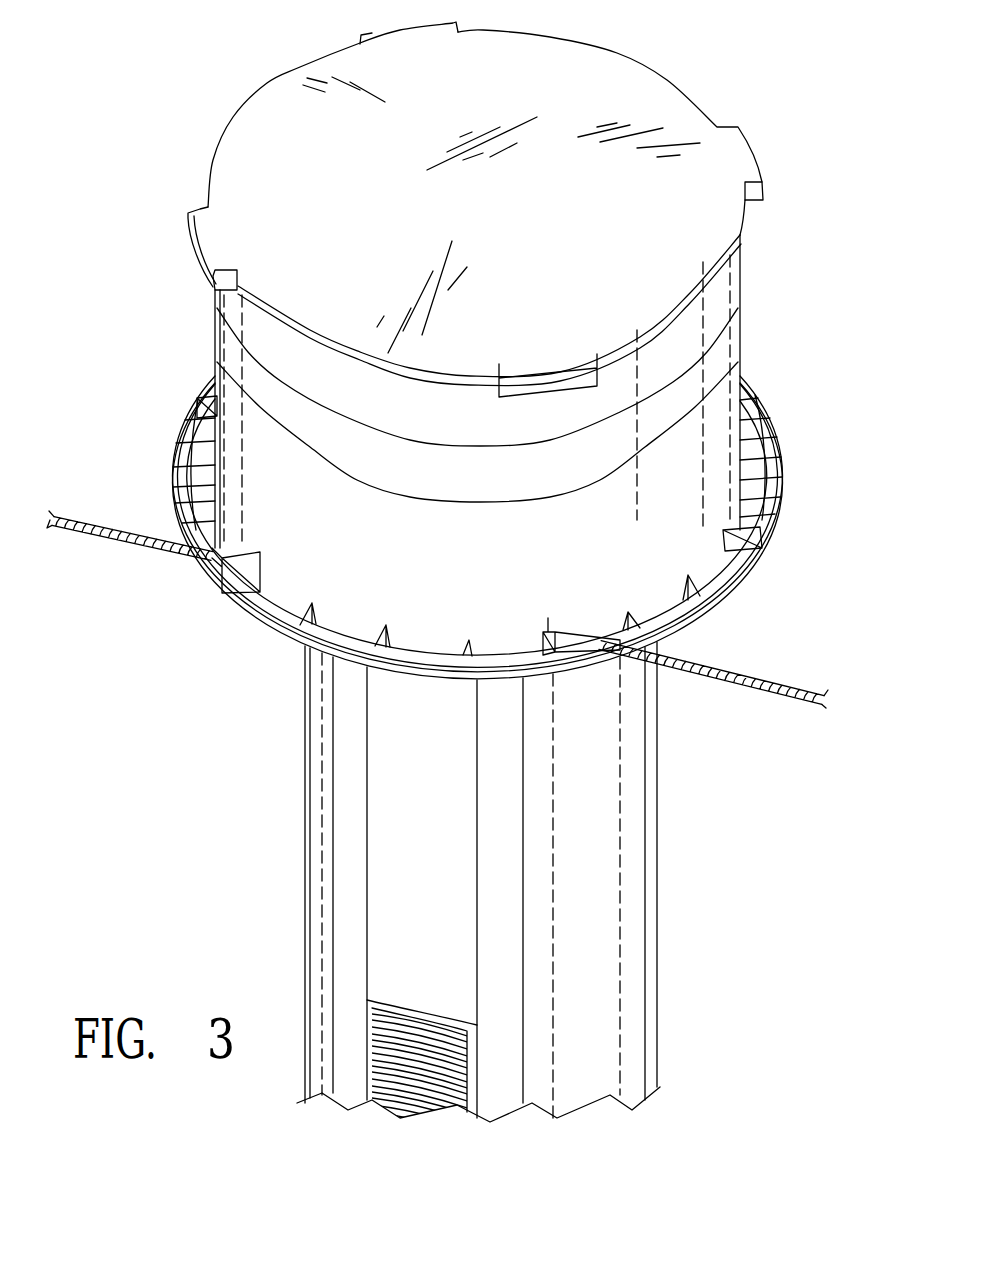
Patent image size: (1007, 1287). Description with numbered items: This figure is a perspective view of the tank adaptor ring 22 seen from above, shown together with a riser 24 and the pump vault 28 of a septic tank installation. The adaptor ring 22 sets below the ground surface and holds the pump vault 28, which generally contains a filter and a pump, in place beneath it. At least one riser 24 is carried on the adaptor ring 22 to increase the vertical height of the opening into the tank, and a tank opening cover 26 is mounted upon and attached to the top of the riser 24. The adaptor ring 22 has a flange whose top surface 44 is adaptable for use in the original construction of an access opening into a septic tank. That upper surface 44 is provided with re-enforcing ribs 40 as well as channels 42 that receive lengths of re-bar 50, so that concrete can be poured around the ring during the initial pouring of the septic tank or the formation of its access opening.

The tank adaptor ring 22 is at (714, 472).
The riser 24 is at (740, 330).
The tank opening cover 26 is at (672, 103).
The pump vault 28 is at (640, 893).
The re-enforcing ribs 40 is at (300, 632).
The channels 42 is at (205, 403).
The top surface 44 is at (765, 428).
The re-bar 50 is at (90, 532).